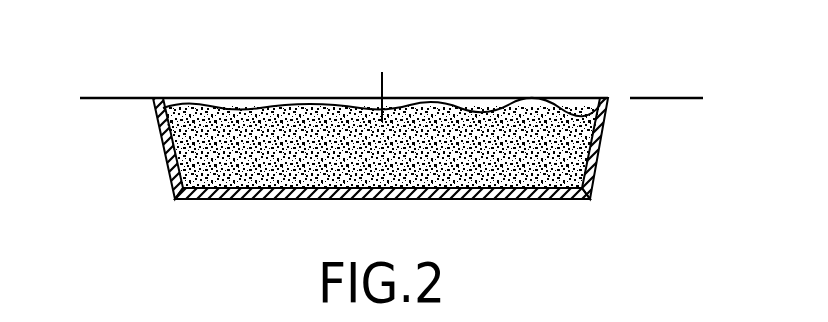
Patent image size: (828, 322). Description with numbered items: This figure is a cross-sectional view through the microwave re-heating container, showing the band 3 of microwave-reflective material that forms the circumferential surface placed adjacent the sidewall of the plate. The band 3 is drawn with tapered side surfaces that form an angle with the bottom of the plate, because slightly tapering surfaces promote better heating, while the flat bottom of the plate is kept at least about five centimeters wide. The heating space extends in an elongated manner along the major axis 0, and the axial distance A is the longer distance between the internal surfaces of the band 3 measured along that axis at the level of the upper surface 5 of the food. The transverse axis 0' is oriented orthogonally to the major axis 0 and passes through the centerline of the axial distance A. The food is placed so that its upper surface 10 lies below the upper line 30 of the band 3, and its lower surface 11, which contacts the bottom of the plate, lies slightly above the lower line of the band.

The major axis 0 is at (391, 124).
The transverse axis 0' is at (406, 84).
The band 3 is at (612, 97).
The upper surface of the food 5 is at (509, 106).
The food upper surface 10 is at (285, 106).
The food lower surface 11 is at (280, 178).
The upper line of the band 30 is at (153, 98).
The axial distance A is at (606, 36).